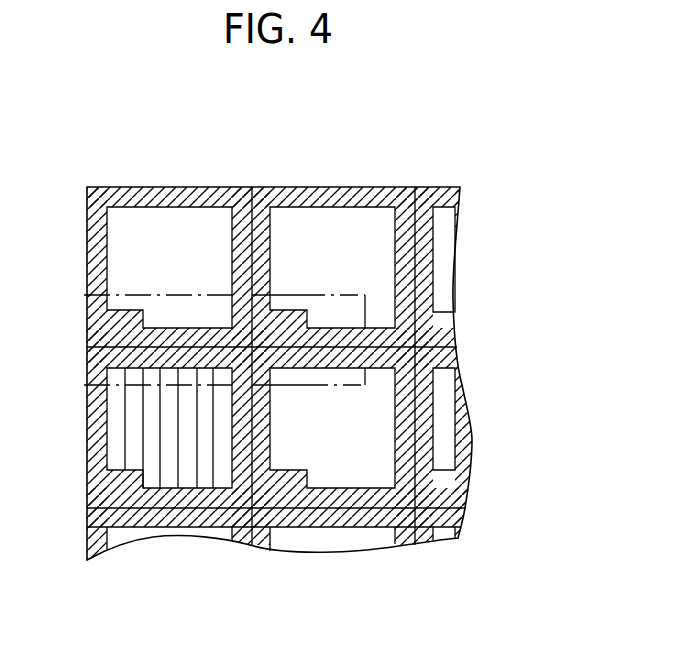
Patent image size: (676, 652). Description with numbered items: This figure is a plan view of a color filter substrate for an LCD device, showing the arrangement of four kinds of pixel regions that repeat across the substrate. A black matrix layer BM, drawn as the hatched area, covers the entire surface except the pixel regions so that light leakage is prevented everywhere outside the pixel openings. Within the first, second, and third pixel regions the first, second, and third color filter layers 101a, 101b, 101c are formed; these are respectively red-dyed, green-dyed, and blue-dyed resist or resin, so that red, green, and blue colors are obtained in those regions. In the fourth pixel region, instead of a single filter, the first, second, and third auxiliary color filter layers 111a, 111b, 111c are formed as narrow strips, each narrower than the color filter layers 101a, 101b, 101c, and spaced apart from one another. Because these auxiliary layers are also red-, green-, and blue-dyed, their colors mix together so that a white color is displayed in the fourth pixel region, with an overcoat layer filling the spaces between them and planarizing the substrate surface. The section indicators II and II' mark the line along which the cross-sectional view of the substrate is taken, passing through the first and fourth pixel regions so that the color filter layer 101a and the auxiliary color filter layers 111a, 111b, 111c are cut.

The black matrix layer BM is at (236, 210).
The first color filter layer 101a is at (167, 210).
The second color filter layer 101b is at (343, 210).
The third color filter layer 101c is at (358, 470).
The first auxiliary color filter layer 111a is at (133, 462).
The second auxiliary color filter layer 111b is at (168, 478).
The third auxiliary color filter layer 111c is at (199, 478).
The section line II is at (127, 296).
The section line II' is at (127, 386).